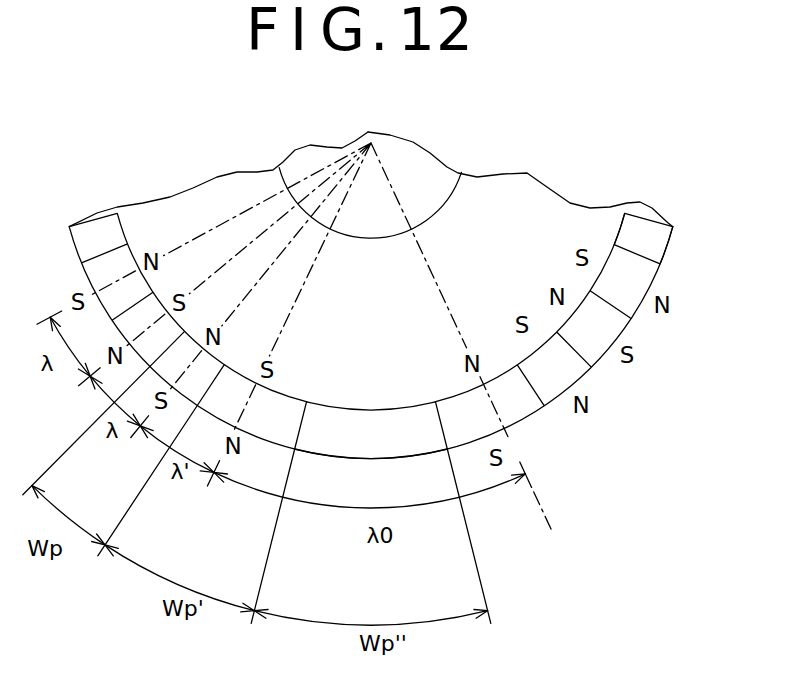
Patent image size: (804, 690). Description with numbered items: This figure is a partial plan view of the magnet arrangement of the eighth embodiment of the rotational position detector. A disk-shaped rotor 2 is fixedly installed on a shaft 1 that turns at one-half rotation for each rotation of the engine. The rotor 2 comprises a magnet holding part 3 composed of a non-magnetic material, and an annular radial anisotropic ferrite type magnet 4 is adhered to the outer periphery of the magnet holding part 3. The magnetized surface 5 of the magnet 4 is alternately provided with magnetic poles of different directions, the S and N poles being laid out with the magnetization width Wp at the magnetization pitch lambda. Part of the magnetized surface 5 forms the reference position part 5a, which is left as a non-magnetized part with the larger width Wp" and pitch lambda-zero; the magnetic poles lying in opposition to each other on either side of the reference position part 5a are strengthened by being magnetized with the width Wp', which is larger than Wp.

The shaft 1 is at (420, 142).
The rotor 2 is at (230, 185).
The magnet holding part 3 is at (535, 177).
The magnet 4 is at (645, 211).
The magnetized surface 5 is at (657, 268).
The reference position part 5a is at (347, 460).